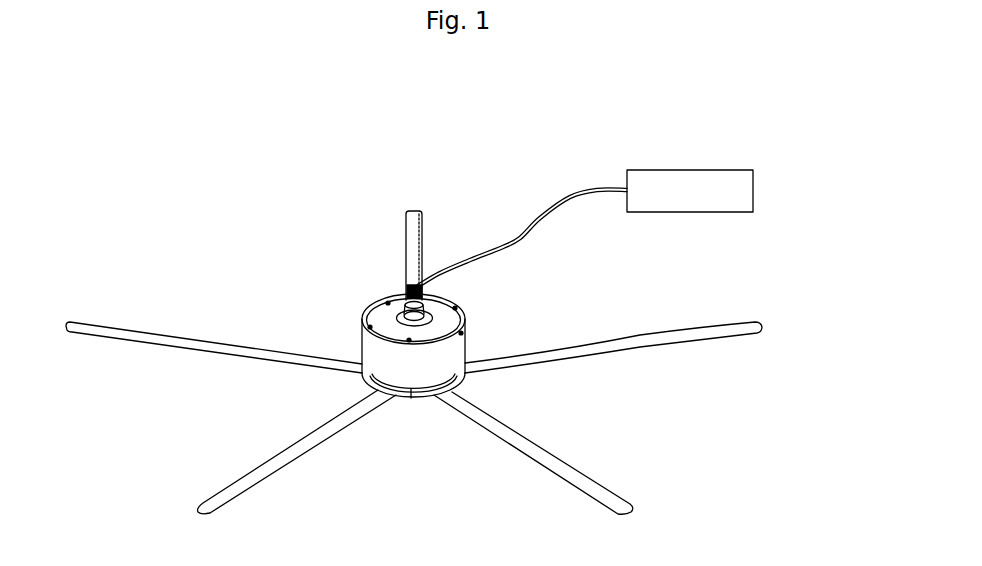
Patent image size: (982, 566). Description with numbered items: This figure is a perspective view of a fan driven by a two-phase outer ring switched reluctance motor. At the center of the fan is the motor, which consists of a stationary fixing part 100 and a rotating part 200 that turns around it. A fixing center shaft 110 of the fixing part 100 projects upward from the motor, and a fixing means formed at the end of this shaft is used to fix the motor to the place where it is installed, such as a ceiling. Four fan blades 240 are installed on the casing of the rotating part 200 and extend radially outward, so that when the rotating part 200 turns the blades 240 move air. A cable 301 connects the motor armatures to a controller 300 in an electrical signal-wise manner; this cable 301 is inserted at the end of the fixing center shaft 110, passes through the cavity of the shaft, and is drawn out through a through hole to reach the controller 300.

The fixing part 100 is at (405, 291).
The fixing center shaft 110 is at (410, 303).
The rotating part 200 is at (370, 350).
The fan blades 240 is at (243, 475).
The controller 300 is at (753, 191).
The cable 301 is at (520, 238).